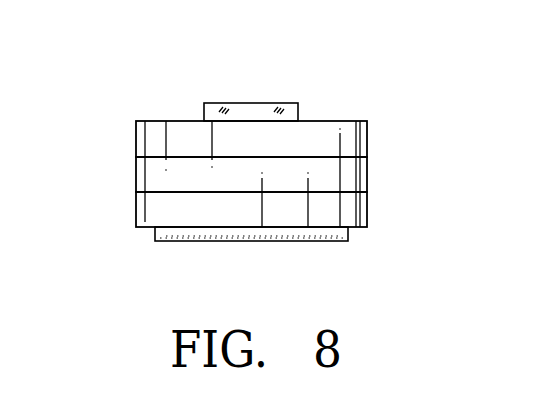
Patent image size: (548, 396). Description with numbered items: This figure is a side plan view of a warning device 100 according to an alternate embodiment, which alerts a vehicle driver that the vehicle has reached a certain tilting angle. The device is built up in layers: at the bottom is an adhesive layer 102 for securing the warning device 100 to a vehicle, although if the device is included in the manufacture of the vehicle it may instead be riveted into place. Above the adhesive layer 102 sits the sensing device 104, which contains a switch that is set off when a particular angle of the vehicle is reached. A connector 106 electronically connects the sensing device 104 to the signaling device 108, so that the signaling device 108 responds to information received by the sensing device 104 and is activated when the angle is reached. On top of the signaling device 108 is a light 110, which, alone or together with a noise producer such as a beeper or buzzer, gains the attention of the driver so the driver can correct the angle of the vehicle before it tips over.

The warning device 100 is at (119, 143).
The adhesive layer 102 is at (345, 241).
The sensing device 104 is at (350, 210).
The connector 106 is at (350, 175).
The signaling device 108 is at (365, 138).
The light 110 is at (299, 108).